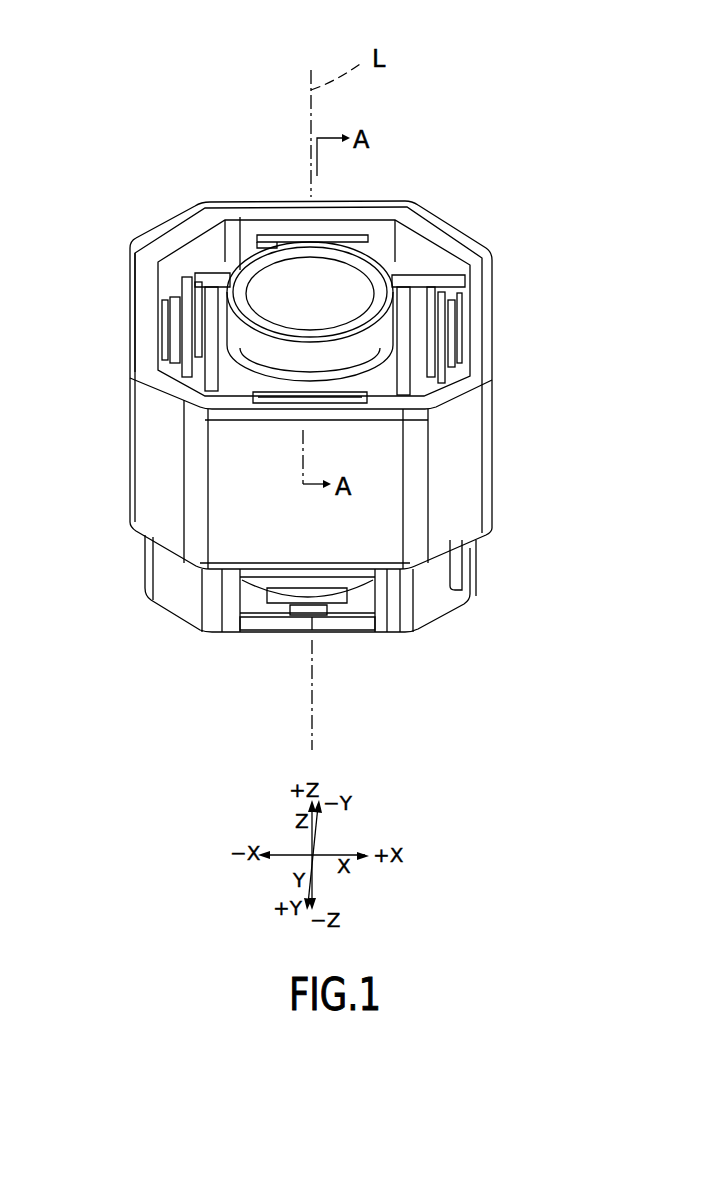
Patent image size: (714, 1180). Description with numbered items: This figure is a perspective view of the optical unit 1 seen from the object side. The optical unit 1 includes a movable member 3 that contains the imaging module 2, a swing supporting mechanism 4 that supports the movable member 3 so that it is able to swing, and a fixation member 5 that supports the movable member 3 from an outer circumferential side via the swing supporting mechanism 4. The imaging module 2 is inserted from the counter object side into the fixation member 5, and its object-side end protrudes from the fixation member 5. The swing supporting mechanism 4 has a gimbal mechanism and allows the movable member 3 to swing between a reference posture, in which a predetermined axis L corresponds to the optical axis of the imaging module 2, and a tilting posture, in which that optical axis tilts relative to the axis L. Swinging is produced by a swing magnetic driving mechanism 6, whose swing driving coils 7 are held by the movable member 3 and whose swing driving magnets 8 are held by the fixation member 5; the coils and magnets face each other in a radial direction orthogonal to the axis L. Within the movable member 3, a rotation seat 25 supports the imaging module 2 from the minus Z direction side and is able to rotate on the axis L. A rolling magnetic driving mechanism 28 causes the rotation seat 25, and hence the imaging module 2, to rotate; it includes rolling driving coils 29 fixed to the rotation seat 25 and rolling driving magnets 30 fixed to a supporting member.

The optical unit 1 is at (107, 73).
The imaging module 2 is at (380, 272).
The movable member 3 is at (440, 290).
The swing supporting mechanism 4 is at (425, 343).
The fixation member 5 is at (503, 449).
The swing magnetic driving mechanism 6 is at (161, 315).
The swing driving coil 7 is at (178, 287).
The swing driving magnet 8 is at (273, 236).
The rotation seat 25 is at (337, 598).
The rolling magnetic driving mechanism 28 is at (418, 672).
The rolling driving coil 29 is at (327, 610).
The rolling driving magnet 30 is at (320, 627).